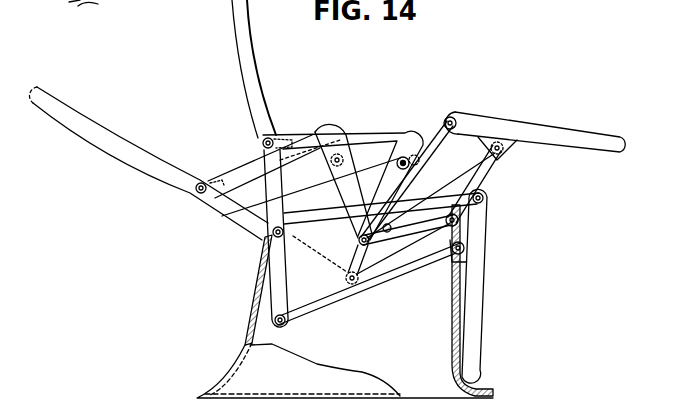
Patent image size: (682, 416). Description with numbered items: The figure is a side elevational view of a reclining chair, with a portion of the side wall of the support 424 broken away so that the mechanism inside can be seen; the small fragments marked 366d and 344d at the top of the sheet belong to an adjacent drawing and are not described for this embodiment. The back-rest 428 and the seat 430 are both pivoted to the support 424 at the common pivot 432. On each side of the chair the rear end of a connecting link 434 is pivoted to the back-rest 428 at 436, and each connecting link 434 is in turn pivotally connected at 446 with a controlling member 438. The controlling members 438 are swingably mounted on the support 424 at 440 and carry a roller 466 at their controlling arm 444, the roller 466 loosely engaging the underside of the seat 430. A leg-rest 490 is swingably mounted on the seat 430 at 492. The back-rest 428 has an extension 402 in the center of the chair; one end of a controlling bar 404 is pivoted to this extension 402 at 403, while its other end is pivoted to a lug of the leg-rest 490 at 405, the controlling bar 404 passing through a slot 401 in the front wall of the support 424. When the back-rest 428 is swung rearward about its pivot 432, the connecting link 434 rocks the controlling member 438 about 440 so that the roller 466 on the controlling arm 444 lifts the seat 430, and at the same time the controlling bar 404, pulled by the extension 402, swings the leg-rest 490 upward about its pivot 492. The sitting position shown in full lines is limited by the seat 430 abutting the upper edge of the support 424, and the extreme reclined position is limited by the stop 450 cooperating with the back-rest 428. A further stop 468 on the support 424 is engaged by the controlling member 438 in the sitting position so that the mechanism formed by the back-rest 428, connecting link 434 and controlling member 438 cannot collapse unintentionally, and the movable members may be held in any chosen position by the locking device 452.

The fragment numeral (adjacent figure) 366d is at (69, 2).
The fragment numeral (adjacent figure) 344d is at (111, 8).
The back-rest 428 is at (249, 61).
The seat 430 is at (327, 220).
The pivot 432 is at (266, 235).
The connecting link 434 is at (355, 138).
The pivot 436 is at (270, 133).
The controlling member 438 is at (412, 183).
The pivot 440 is at (362, 240).
The controlling arm 444 is at (440, 222).
The pivot 446 is at (404, 158).
The stop 450 is at (240, 217).
The locking device 452 is at (290, 137).
The roller 466 is at (487, 203).
The stop 468 is at (388, 229).
The leg-rest 490 is at (477, 312).
The pivot 492 is at (480, 195).
The slot 401 is at (477, 273).
The extension 402 is at (275, 265).
The pivot 403 is at (283, 327).
The controlling bar 404 is at (333, 297).
The pivot 405 is at (463, 250).
The support 424 is at (247, 303).